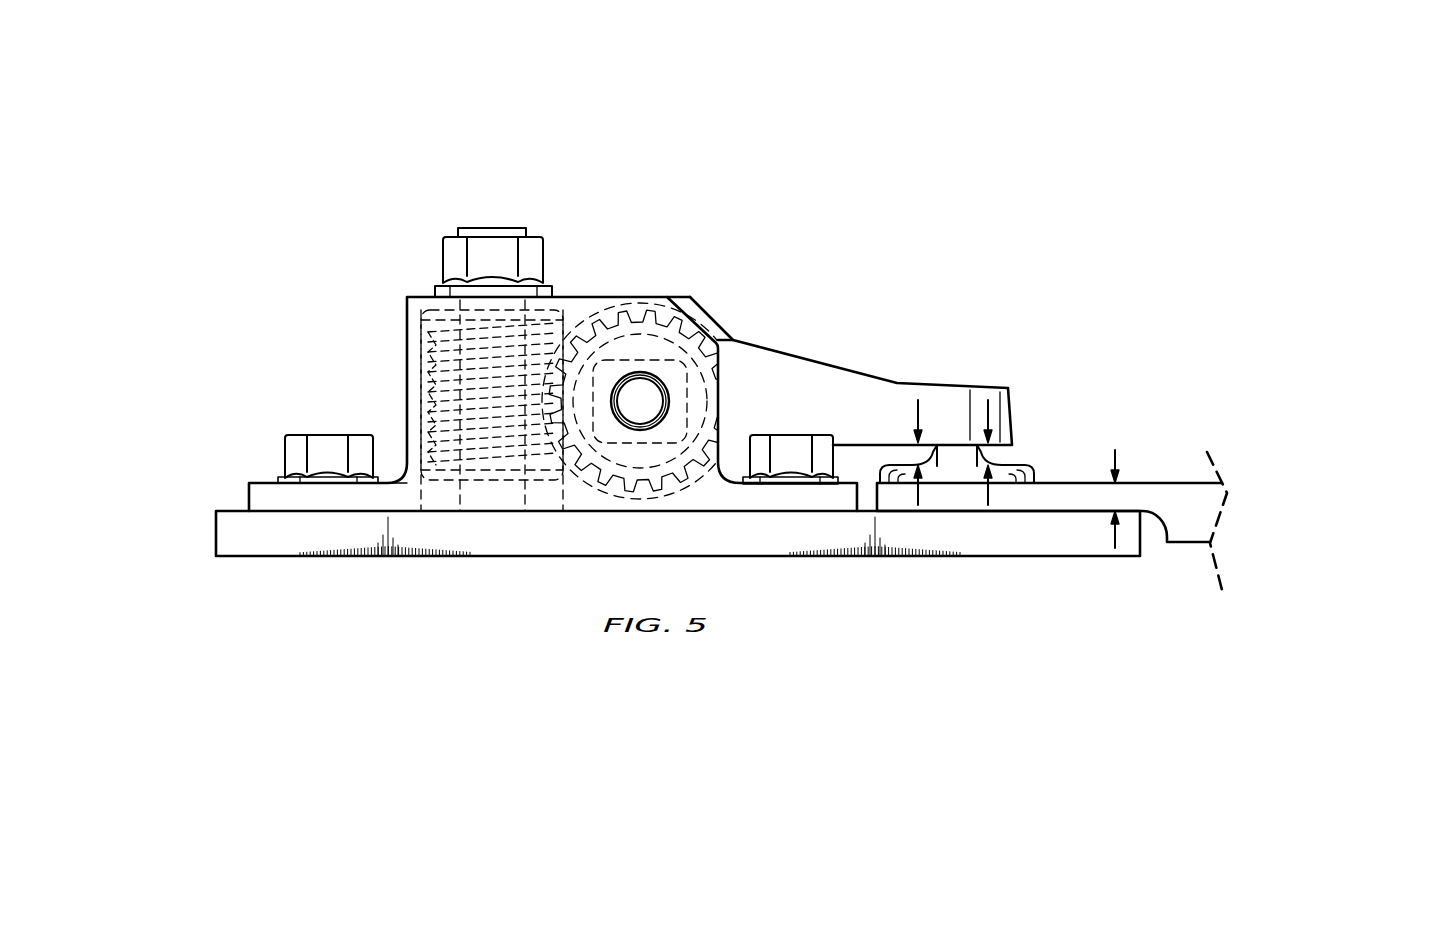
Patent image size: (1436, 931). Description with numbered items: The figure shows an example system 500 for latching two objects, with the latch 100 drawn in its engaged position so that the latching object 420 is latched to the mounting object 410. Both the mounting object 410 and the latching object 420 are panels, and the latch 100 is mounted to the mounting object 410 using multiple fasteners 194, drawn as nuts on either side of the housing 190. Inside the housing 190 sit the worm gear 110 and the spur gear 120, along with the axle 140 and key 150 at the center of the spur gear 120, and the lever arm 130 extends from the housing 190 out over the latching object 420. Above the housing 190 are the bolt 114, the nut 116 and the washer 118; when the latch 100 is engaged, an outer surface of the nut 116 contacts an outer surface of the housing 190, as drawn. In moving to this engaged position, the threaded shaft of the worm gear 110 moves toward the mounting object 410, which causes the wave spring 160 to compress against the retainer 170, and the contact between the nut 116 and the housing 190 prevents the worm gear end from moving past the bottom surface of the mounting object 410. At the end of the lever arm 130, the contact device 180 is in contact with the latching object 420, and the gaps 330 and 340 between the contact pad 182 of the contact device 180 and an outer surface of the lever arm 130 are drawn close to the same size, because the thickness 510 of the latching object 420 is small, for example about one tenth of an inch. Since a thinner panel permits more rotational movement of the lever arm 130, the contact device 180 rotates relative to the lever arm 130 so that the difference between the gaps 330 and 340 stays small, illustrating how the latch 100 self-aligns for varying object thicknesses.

The system 500 is at (287, 65).
The latch 100 is at (797, 324).
The worm gear 110 is at (428, 372).
The bolt 114 is at (485, 228).
The nut 116 is at (443, 252).
The washer 118 is at (555, 290).
The spur gear 120 is at (658, 316).
The lever arm 130 is at (870, 372).
The axle 140 is at (645, 400).
The key 150 is at (688, 371).
The wave spring 160 is at (433, 475).
The retainer 170 is at (500, 503).
The contact device 180 is at (1024, 437).
The contact pad 182 is at (1003, 482).
The housing 190 is at (407, 397).
The fasteners 194 is at (286, 452).
The gap 330 is at (918, 443).
The gap 340 is at (992, 455).
The mounting object 410 is at (728, 556).
The latching object 420 is at (1152, 483).
The thickness 510 is at (1114, 476).